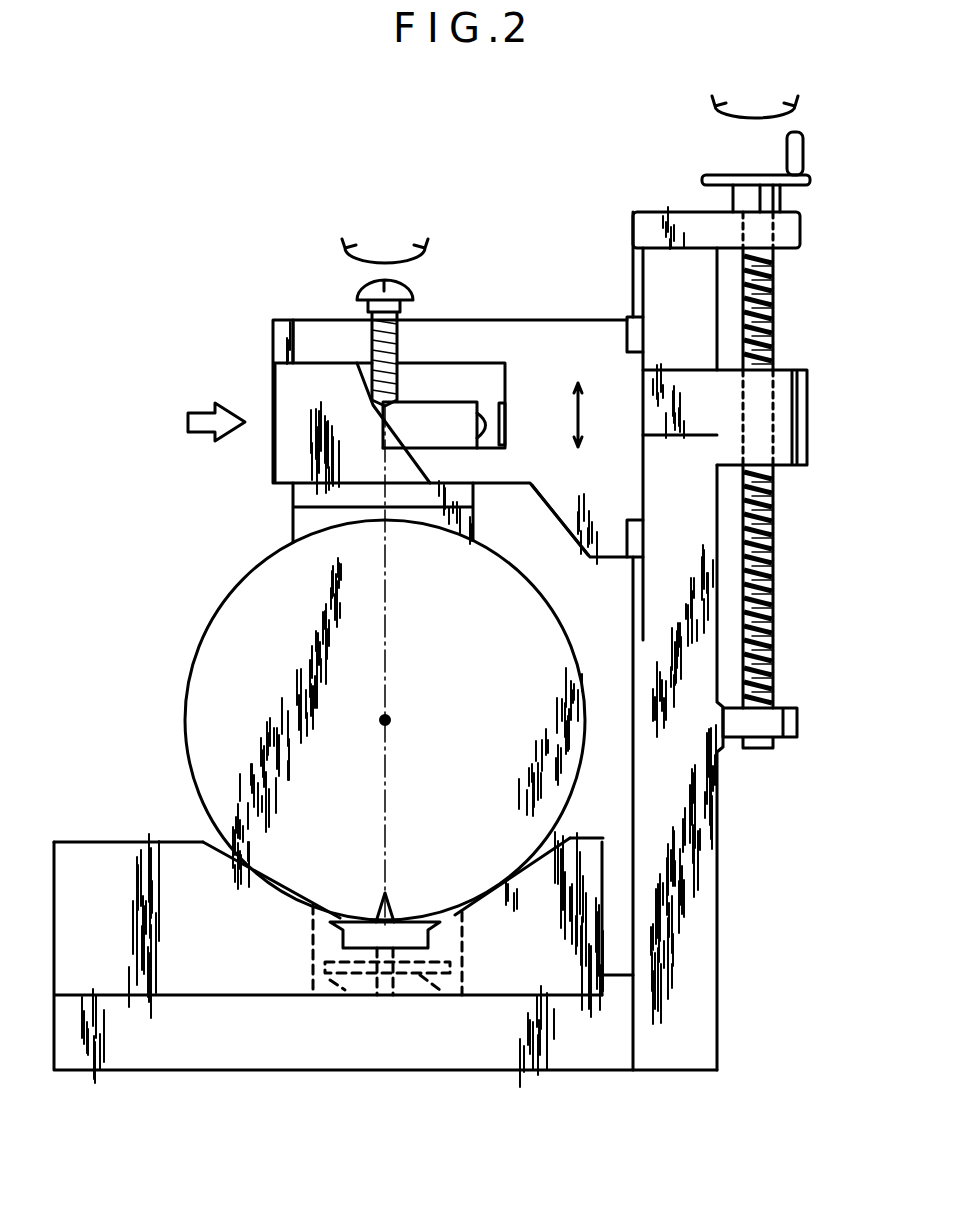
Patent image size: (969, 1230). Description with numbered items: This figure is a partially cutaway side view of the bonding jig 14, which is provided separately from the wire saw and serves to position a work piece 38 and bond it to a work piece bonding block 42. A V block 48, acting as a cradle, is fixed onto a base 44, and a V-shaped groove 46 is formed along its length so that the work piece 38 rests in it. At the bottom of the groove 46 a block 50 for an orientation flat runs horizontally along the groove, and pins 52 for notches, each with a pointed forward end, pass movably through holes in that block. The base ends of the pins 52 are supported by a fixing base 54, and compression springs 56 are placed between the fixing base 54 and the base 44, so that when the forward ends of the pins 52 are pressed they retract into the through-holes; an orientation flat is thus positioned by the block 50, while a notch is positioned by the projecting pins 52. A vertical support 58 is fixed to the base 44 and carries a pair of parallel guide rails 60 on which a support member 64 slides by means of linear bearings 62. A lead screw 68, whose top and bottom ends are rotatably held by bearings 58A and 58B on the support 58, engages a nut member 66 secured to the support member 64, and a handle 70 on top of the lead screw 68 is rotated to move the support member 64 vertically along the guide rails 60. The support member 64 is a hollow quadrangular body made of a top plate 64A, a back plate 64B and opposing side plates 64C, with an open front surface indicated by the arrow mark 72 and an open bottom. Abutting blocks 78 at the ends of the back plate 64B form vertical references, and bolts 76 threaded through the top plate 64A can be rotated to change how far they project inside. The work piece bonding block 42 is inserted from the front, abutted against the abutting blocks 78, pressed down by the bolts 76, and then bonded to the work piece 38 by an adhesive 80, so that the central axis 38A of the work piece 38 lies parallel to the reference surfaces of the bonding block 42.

The bonding jig 14 is at (428, 536).
The work piece 38 is at (223, 705).
The central axis 38A is at (393, 720).
The work piece bonding block 42 is at (448, 415).
The base 44 is at (473, 1032).
The V-shaped groove 46 is at (498, 887).
The V block 48 is at (113, 872).
The block for orientation flat 50 is at (310, 957).
The pins for notches 52 is at (402, 893).
The fixing base 54 is at (385, 997).
The compression springs 56 is at (325, 997).
The vertical support 58 is at (688, 943).
The bearing 58A is at (800, 235).
The bearing 58B is at (800, 737).
The guide rails 60 is at (633, 233).
The linear bearings 62 is at (637, 548).
The support member 64 is at (481, 312).
The top plate 64A is at (315, 332).
The back plate 64B is at (550, 423).
The side plates 64C is at (290, 445).
The nut member 66 is at (792, 423).
The lead screw 68 is at (772, 612).
The handle 70 is at (810, 178).
The arrow mark 72 is at (205, 413).
The bolts 76 is at (365, 293).
The abutting blocks 78 is at (529, 431).
The adhesive 80 is at (420, 507).